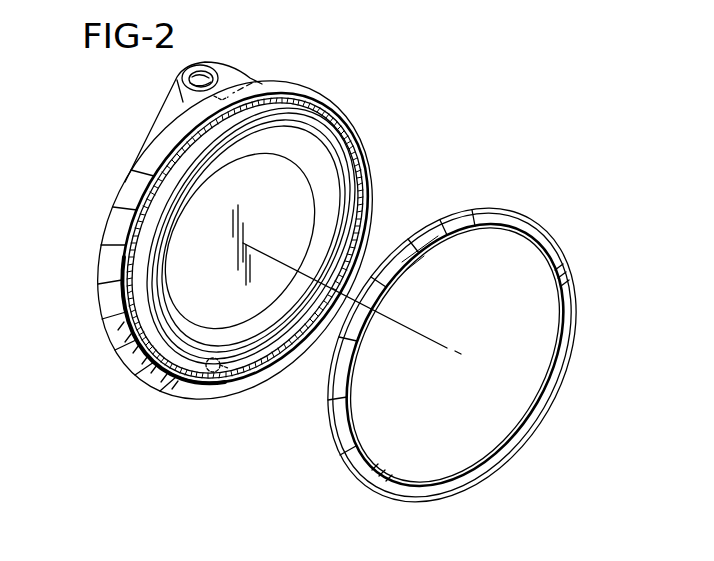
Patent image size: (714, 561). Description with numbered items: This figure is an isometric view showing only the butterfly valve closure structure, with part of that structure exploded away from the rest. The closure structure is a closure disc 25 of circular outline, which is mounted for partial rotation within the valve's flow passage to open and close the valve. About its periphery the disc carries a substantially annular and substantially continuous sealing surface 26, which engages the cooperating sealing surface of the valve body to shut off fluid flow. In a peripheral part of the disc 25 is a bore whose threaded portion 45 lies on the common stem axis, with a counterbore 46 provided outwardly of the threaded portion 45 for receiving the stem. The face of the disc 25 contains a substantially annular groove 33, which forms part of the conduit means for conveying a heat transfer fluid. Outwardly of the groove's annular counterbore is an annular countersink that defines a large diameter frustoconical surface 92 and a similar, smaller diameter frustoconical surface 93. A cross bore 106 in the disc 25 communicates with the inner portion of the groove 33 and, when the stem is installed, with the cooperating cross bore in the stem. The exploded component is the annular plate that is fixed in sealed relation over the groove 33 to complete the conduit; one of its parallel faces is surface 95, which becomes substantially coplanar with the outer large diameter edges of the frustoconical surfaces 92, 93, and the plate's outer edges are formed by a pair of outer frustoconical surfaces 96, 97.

The closure disc 25 is at (332, 165).
The sealing surface 26 is at (112, 224).
The annular groove 33 is at (360, 198).
The threaded portion 45 is at (182, 79).
The counterbore 46 is at (207, 67).
The frustoconical surface 92 is at (338, 120).
The frustoconical surface 93 is at (170, 209).
The surface 95 is at (562, 261).
The outer frustoconical surface 96 is at (485, 207).
The outer frustoconical surface 97 is at (560, 317).
The cross bore 106 is at (254, 82).